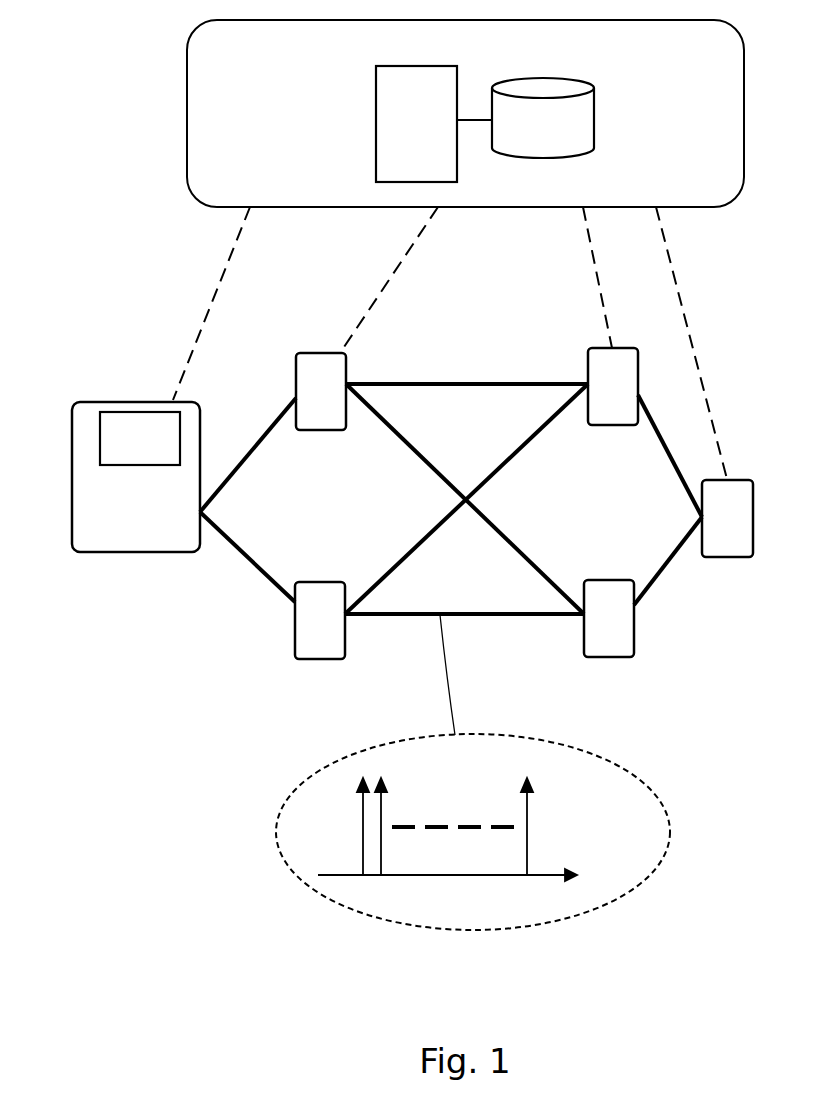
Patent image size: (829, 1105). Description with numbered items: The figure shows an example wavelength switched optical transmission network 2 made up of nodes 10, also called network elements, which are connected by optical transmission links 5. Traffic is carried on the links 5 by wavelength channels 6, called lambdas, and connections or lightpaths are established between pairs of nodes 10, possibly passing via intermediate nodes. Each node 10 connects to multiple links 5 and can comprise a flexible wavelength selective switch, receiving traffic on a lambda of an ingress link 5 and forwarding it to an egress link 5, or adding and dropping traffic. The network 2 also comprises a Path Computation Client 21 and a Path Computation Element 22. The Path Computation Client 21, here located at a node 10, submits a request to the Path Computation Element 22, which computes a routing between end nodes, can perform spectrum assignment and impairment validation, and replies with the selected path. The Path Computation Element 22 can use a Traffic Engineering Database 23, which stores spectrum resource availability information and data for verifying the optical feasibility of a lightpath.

The optical transmission network 2 is at (118, 176).
The optical transmission link 5 is at (264, 432).
The wavelength channel 6 is at (362, 790).
The node 10 is at (97, 402).
The Path Computation Client 21 is at (150, 412).
The Path Computation Element 22 is at (376, 122).
The Traffic Engineering Database 23 is at (595, 112).